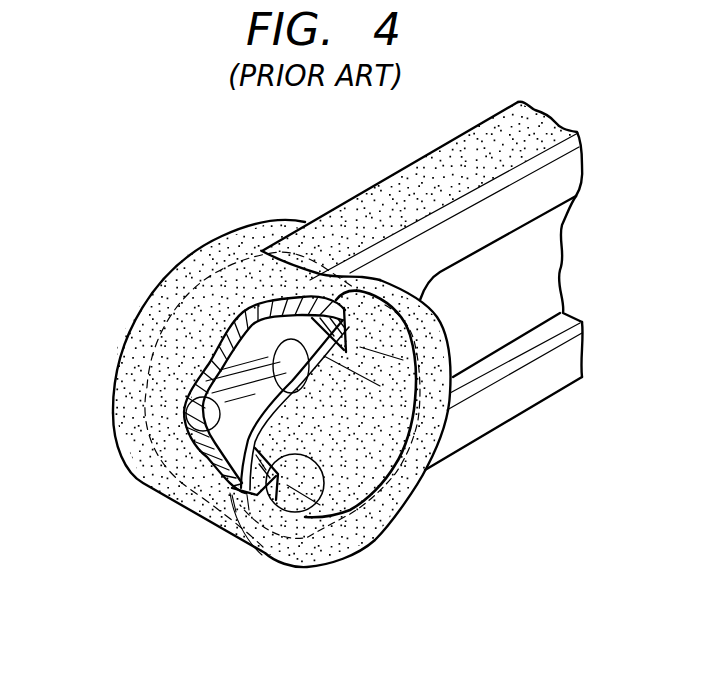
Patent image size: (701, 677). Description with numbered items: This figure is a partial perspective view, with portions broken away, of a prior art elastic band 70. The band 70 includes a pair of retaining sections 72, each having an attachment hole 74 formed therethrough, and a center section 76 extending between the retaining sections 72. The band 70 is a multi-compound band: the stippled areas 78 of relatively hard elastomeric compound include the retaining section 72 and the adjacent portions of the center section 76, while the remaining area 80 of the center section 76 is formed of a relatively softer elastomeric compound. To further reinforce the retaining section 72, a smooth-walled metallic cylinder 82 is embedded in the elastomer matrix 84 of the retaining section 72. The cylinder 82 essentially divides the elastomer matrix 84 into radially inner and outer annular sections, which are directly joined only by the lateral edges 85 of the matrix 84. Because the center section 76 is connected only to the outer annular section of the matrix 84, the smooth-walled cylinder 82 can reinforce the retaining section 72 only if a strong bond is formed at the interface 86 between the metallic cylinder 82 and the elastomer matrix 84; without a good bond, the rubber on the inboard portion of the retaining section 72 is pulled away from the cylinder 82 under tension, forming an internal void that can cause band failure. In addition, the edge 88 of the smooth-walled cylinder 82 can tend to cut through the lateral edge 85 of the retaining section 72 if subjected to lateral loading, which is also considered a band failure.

The elastic band 70 is at (367, 176).
The retaining section 72 is at (143, 327).
The attachment hole 74 is at (350, 460).
The center section 76 is at (485, 135).
The area of relatively hard elastomeric compound 78 is at (454, 475).
The remaining area of the center section 80 is at (535, 412).
The smooth-walled metallic cylinder 82 is at (243, 350).
The elastomer matrix 84 is at (306, 518).
The lateral edge 85 is at (307, 300).
The interface 86 is at (188, 398).
The edge of the smooth-walled cylinder 88 is at (247, 312).